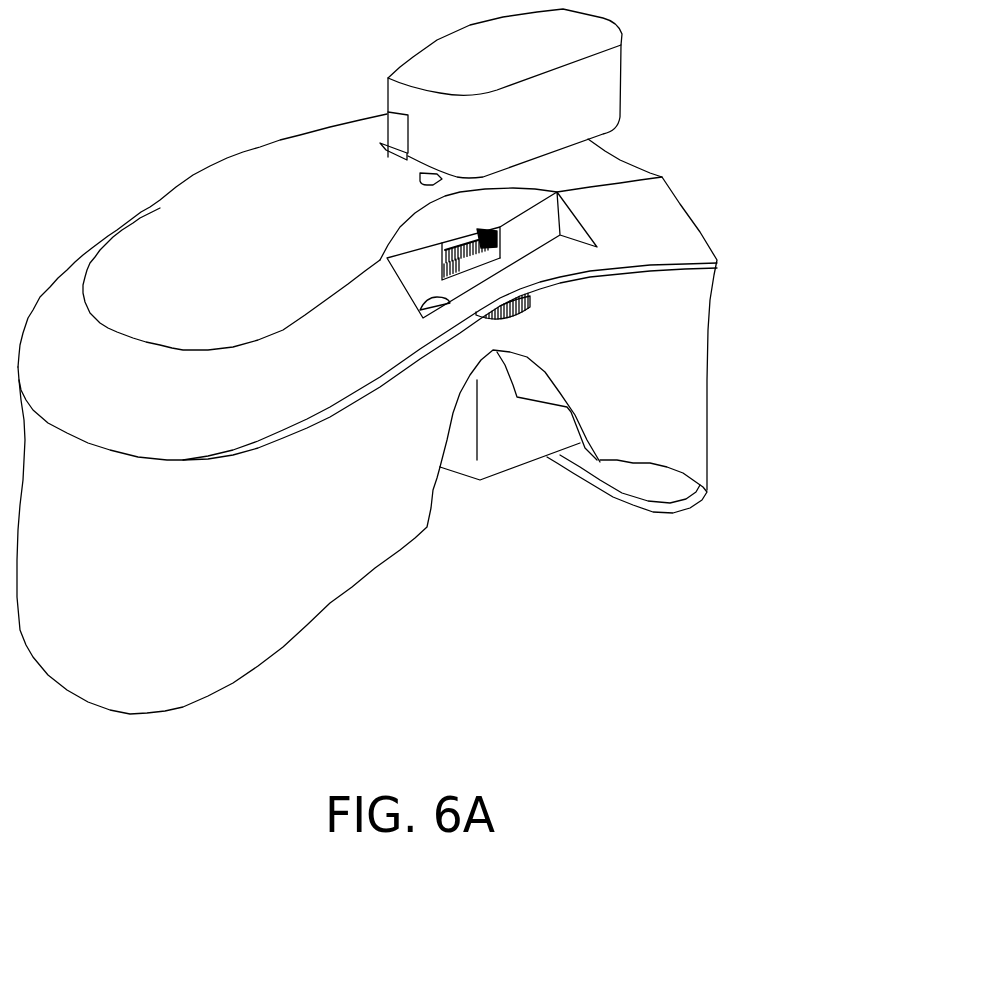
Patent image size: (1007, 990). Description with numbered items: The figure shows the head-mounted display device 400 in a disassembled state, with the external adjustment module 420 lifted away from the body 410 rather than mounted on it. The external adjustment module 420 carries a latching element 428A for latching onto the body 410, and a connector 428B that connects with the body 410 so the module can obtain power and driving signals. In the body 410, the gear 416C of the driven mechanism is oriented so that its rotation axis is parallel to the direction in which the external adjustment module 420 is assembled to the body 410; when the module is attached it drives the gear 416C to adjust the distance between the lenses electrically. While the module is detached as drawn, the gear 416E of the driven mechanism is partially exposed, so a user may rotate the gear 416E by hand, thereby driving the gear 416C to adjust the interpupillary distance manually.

The head-mounted display device 400 is at (733, 709).
The body 410 is at (717, 398).
The gear 416C is at (557, 193).
The gear 416E is at (530, 300).
The external adjustment module 420 is at (645, 93).
The latching element 428A is at (392, 128).
The connector 428B is at (420, 180).